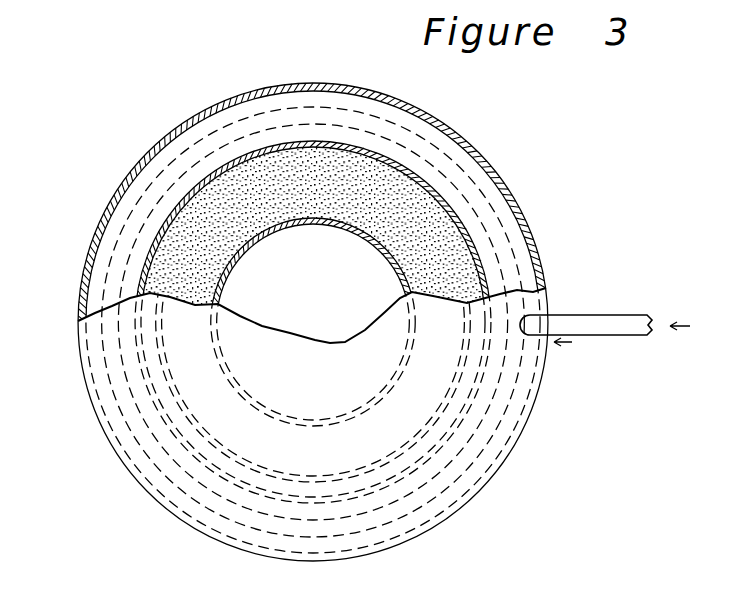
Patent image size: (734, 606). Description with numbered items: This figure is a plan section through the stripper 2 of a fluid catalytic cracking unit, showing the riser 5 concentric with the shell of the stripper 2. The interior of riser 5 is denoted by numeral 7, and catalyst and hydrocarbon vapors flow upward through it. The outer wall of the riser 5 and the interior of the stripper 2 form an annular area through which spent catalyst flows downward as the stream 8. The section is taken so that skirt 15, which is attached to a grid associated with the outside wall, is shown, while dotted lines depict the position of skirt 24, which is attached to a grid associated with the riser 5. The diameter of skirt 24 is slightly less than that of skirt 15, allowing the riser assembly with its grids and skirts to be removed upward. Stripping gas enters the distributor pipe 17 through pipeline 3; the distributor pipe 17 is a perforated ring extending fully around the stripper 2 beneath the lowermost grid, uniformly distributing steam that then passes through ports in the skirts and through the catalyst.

The stripper 2 is at (150, 144).
The pipeline 3 is at (602, 315).
The riser 5 is at (345, 413).
The interior of riser 7 is at (322, 318).
The catalyst stream 8 is at (380, 205).
The skirt 15 is at (342, 142).
The distributor pipe 17 is at (510, 262).
The skirt 24 is at (460, 222).